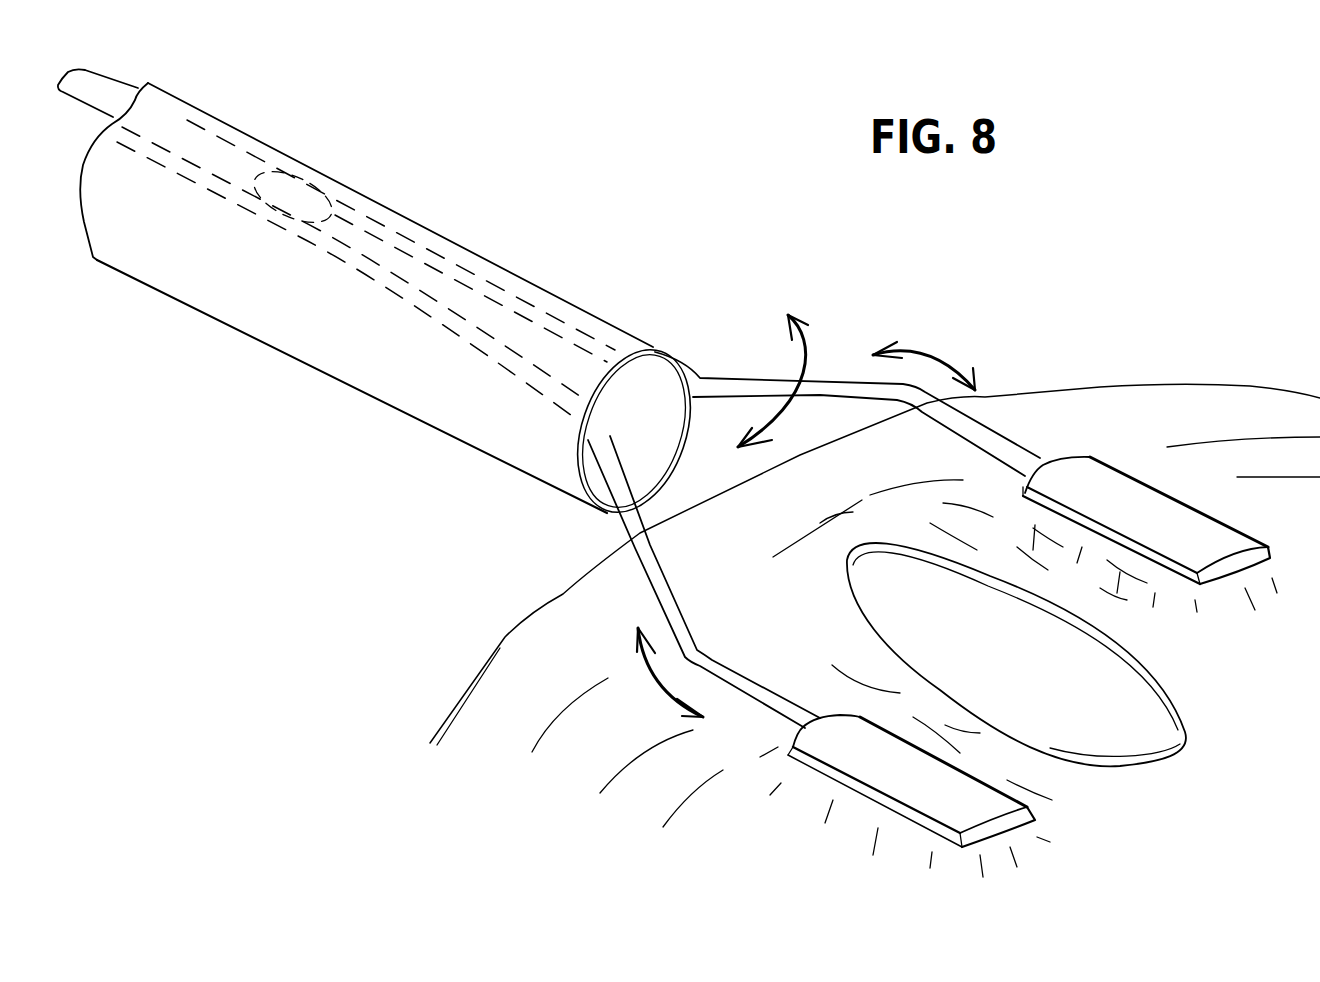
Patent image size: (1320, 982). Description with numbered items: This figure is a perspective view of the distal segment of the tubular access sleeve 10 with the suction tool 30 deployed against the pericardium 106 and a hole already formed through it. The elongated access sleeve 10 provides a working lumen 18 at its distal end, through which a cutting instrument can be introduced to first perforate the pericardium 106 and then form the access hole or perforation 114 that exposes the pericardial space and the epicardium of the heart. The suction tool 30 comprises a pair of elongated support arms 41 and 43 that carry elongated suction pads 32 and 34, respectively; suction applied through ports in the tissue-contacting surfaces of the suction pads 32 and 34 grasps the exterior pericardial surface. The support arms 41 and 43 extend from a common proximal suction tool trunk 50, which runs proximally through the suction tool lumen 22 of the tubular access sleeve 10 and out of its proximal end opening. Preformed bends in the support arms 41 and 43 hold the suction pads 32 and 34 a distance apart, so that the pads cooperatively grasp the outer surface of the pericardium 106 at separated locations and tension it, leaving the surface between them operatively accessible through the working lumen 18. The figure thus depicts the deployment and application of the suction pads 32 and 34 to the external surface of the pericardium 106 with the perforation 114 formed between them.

The tubular access sleeve 10 is at (217, 377).
The proximal suction tool trunk 50 is at (110, 90).
The suction tool lumen 22 is at (333, 183).
The working lumen 18 is at (657, 443).
The suction tool 30 is at (1080, 325).
The suction pad 34 is at (1113, 488).
The suction pad 32 is at (860, 768).
The support arm 43 is at (738, 338).
The support arm 41 is at (590, 602).
The pericardium 106 is at (548, 812).
The access hole or perforation 114 is at (1175, 692).